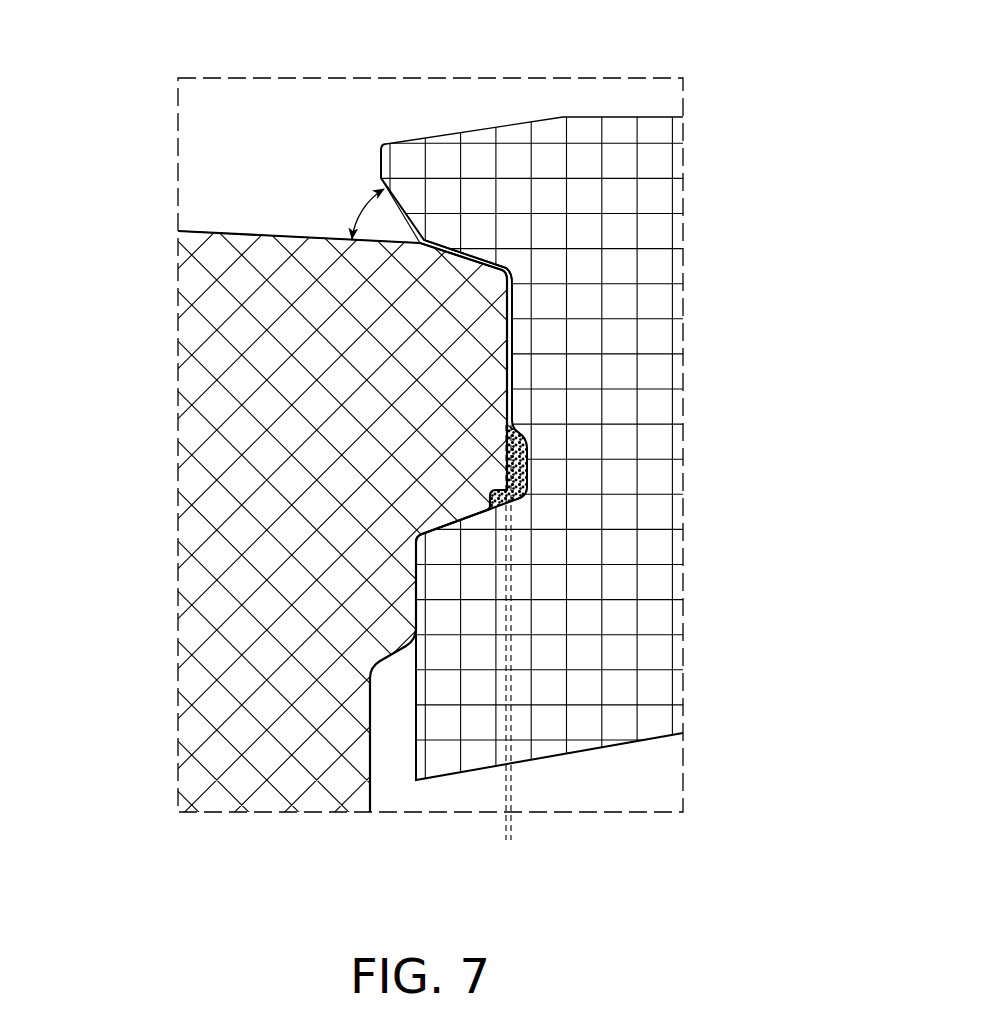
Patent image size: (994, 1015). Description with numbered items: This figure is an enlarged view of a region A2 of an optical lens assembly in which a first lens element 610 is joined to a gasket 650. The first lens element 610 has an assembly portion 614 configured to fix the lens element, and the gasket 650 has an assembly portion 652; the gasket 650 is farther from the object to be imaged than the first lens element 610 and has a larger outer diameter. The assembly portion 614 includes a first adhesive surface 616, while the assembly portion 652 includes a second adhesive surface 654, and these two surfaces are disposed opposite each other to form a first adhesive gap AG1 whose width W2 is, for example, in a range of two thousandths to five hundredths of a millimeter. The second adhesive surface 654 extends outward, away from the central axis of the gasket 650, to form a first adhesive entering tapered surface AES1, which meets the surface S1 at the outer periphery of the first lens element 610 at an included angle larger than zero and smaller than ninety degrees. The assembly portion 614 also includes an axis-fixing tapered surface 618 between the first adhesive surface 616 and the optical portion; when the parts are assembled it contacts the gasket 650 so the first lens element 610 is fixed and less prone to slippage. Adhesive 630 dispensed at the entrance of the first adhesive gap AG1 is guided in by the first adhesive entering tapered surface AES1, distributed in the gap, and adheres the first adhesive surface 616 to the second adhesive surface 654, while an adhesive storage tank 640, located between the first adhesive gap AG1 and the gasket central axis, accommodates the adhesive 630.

The region A2 is at (657, 73).
The first lens element 610 is at (370, 507).
The assembly portion 614 is at (250, 403).
The first adhesive surface 616 is at (505, 395).
The axis-fixing tapered surface 618 is at (452, 518).
The gasket 650 is at (605, 450).
The assembly portion 652 is at (622, 376).
The second adhesive surface 654 is at (470, 252).
The adhesive storage tank 640 is at (528, 458).
The adhesive 630 is at (527, 477).
The surface S1 is at (229, 229).
The first adhesive gap AG1 is at (416, 240).
The first adhesive entering tapered surface AES1 is at (402, 222).
The width W2 is at (540, 836).